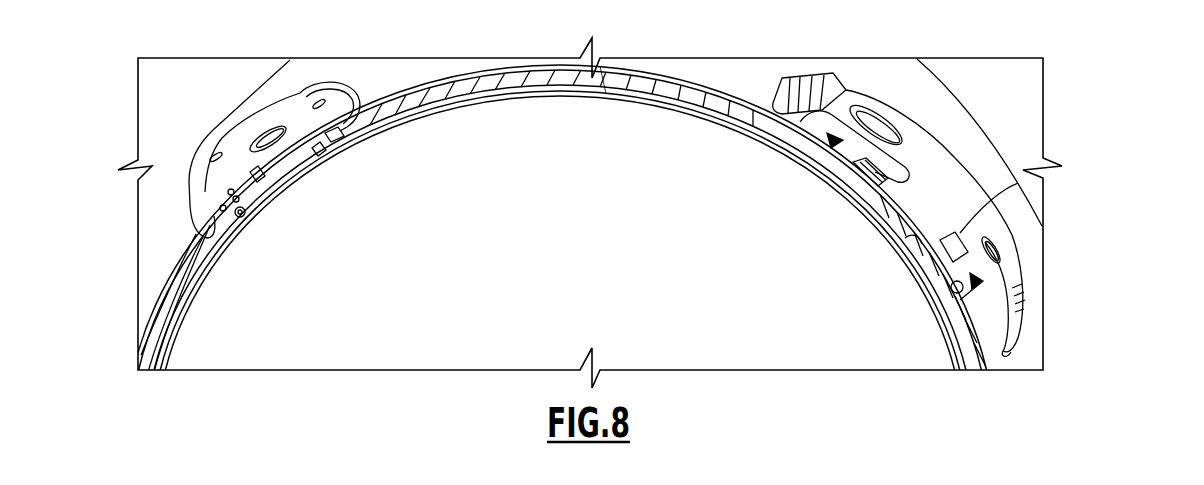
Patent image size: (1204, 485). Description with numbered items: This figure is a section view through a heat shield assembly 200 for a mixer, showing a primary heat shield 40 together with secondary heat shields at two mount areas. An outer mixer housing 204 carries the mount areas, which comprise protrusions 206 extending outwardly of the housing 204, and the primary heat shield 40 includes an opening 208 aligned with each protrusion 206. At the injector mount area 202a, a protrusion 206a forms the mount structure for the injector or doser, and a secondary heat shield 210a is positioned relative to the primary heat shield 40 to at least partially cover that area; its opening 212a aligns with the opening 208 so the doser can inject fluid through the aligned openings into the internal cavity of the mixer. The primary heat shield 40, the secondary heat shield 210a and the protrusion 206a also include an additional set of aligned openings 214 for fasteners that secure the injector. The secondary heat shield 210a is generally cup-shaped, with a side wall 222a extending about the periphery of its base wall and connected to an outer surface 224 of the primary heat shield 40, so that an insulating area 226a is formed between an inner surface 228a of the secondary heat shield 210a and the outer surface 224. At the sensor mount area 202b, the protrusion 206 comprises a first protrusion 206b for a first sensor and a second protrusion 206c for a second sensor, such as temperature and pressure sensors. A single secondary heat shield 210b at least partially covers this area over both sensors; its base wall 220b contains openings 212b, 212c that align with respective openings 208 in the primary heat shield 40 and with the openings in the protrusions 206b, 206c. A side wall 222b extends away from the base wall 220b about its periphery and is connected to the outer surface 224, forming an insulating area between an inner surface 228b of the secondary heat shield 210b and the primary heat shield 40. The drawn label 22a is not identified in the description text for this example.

The heat shield assembly 200 is at (1060, 112).
The injector mount area 202a is at (525, 200).
The sensor mount area 202b is at (959, 214).
The outer mixer housing 204 is at (914, 240).
The protrusions 206 is at (240, 187).
The injector protrusion 206a is at (340, 132).
The first sensor protrusion 206b is at (861, 190).
The second sensor protrusion 206c is at (968, 293).
The primary heat shield opening 208 is at (228, 212).
The secondary heat shield 210a is at (358, 92).
The secondary heat shield 210b is at (826, 84).
The secondary heat shield opening 212a is at (267, 128).
The secondary heat shield opening 212b is at (868, 116).
The secondary heat shield opening 212c is at (996, 242).
The aligned openings 214 is at (203, 153).
The base wall 220b is at (1010, 278).
The side wall 222a is at (192, 222).
The side wall 222b is at (1008, 342).
The outer surface 224 is at (610, 82).
The insulating area 226a is at (228, 236).
The inner surface 228a is at (188, 192).
The inner surface 228b is at (963, 103).
The headband 22a is at (250, 166).
The primary heat shield 40 is at (753, 89).